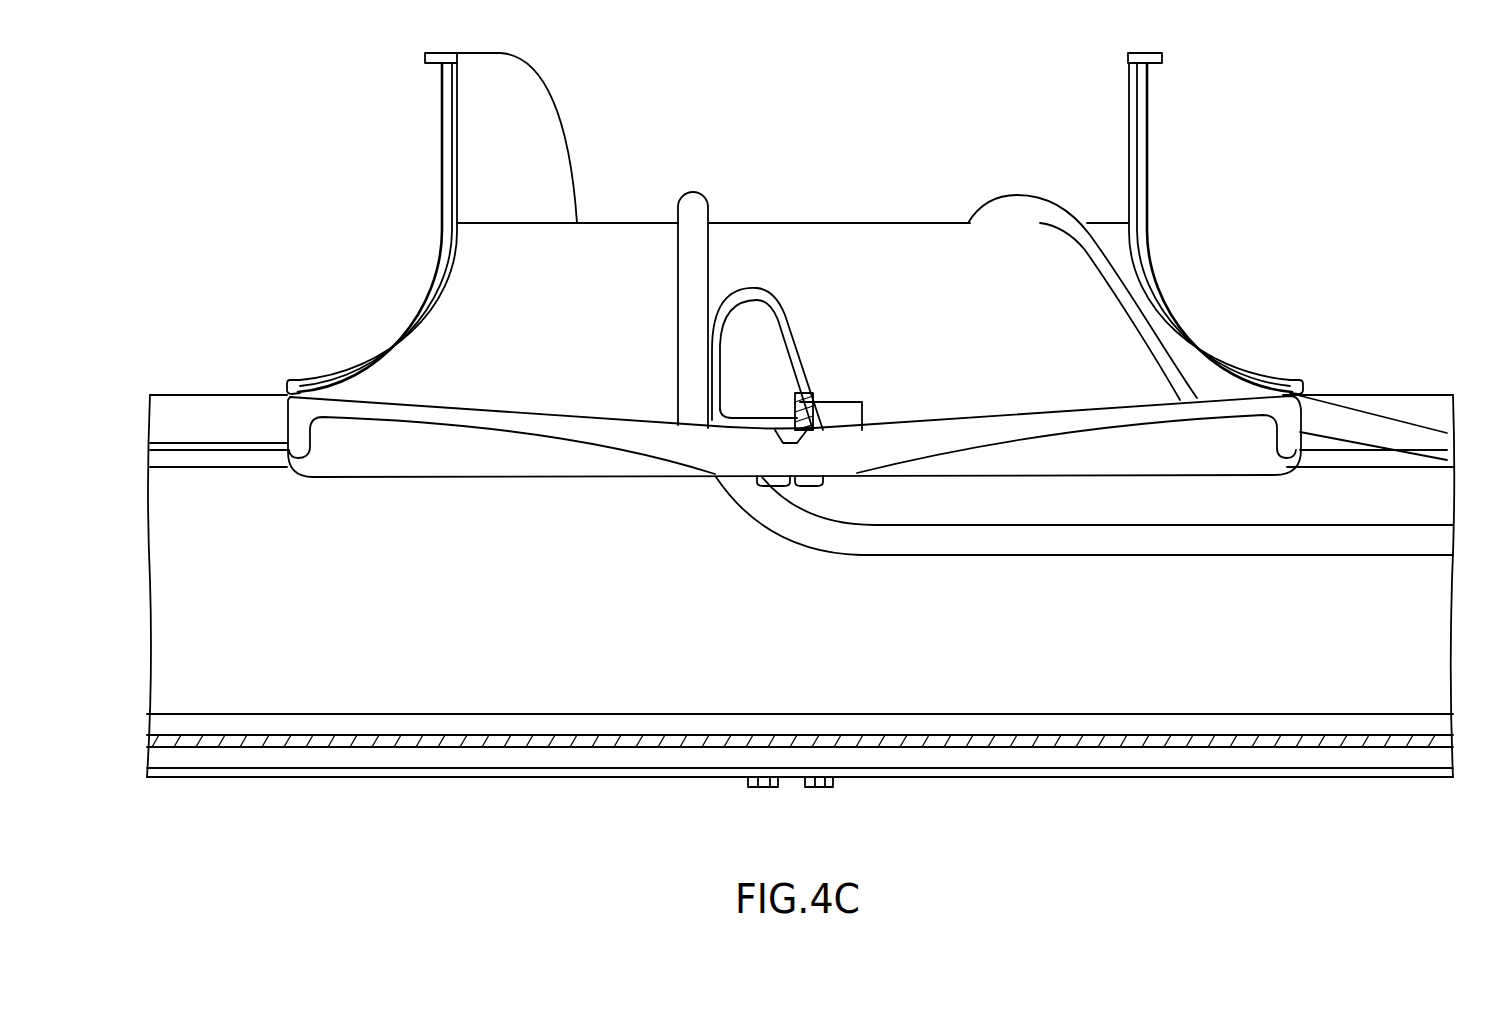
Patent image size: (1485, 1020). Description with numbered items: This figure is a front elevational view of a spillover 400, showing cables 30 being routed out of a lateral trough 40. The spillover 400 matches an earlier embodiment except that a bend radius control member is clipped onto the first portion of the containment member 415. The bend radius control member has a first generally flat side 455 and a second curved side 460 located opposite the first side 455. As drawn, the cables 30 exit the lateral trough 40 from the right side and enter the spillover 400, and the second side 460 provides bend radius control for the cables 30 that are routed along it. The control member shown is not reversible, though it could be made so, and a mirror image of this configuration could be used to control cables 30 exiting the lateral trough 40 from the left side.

The spillover 400 is at (378, 302).
The containment member 415 is at (698, 490).
The first generally flat side 455 is at (792, 343).
The second curved side 460 is at (722, 326).
The cables 30 is at (1343, 418).
The lateral trough 40 is at (955, 658).